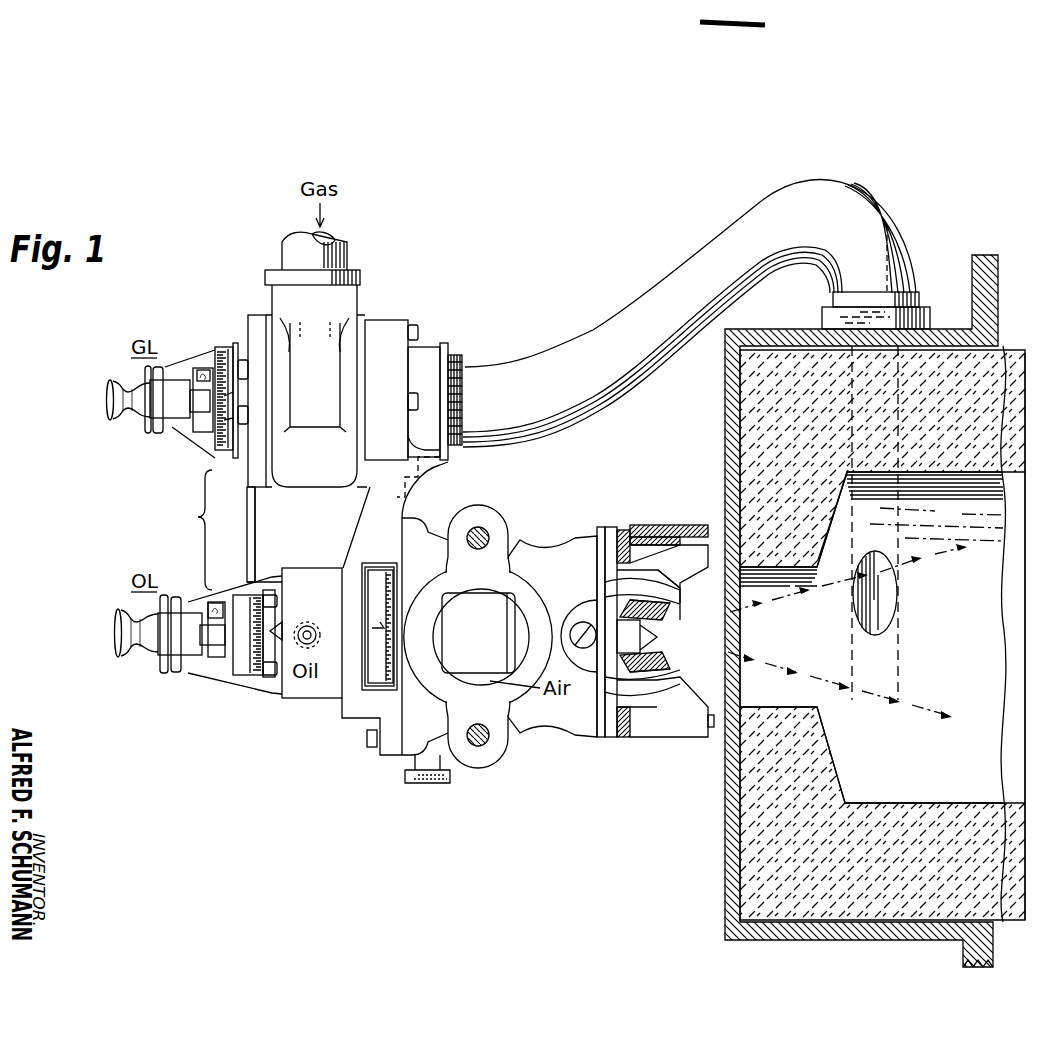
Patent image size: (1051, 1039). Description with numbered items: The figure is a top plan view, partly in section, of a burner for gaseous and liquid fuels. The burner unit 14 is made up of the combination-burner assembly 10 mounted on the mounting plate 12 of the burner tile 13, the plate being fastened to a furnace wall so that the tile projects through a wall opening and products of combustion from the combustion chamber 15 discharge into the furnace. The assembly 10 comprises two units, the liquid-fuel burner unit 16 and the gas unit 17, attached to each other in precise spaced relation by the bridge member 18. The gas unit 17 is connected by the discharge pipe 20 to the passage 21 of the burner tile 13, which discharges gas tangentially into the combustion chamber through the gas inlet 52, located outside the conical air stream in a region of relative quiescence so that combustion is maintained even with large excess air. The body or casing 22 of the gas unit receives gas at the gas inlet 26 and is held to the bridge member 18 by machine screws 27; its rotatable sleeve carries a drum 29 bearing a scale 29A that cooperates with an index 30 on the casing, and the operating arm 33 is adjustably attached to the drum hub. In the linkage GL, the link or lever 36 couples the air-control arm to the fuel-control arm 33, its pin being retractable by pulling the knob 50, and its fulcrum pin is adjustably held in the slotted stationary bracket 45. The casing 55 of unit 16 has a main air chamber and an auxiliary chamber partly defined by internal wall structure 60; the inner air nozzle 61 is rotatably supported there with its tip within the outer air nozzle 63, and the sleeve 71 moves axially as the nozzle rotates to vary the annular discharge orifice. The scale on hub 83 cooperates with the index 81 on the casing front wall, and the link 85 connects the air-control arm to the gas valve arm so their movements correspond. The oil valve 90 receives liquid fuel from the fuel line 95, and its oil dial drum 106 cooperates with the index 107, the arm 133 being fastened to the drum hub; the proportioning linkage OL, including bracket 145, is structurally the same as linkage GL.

The combination-burner assembly 10 is at (191, 530).
The mounting plate 12 is at (728, 430).
The burner tile 13 is at (893, 808).
The burner unit 14 is at (636, 793).
The combustion chamber 15 is at (986, 636).
The liquid-fuel burner unit 16 is at (319, 724).
The gas unit 17 is at (342, 492).
The bridge member 18 is at (367, 511).
The discharge pipe 20 is at (598, 323).
The passage 21 is at (936, 522).
The body or casing 22 is at (358, 318).
The gas inlet 26 is at (348, 254).
The machine screws 27 is at (413, 390).
The drum 29 is at (226, 349).
The scale 29A is at (226, 422).
The index 30 is at (236, 398).
The operating arm 33 is at (200, 416).
The link or lever 36 is at (155, 432).
The slotted stationary bracket 45 is at (208, 360).
The knob 50 is at (107, 392).
The gas inlet 52 is at (892, 598).
The casing 55 is at (523, 735).
The internal wall structure 60 is at (487, 608).
The inner air nozzle 61 is at (676, 652).
The outer air nozzle 63 is at (682, 588).
The sleeve 71 is at (672, 606).
The index 81 is at (388, 622).
The hub 83 is at (378, 663).
The link 85 is at (256, 534).
The valve 90 is at (322, 558).
The fuel line 95 is at (309, 631).
The oil dial drum 106 is at (250, 668).
The index 107 is at (279, 626).
The arm 133 is at (216, 652).
The slotted stationary bracket 145 is at (226, 694).